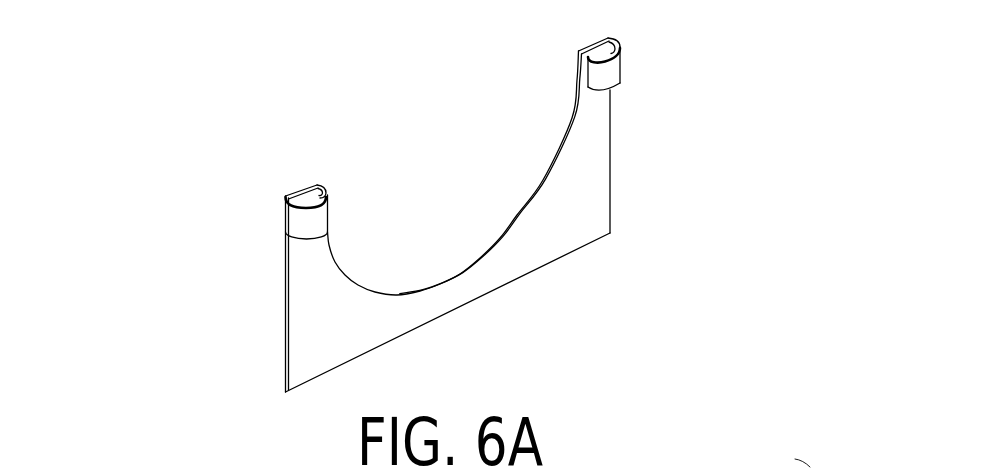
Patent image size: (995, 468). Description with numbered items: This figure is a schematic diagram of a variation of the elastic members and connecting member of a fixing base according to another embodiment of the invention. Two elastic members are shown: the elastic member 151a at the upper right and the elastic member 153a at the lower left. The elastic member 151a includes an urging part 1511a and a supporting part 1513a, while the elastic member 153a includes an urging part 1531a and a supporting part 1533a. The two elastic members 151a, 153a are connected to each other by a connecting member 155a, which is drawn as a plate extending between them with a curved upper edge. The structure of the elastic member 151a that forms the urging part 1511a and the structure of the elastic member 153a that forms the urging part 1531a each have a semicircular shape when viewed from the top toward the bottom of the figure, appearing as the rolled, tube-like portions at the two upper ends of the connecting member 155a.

The elastic member 151a is at (807, 12).
The urging part 1511a is at (610, 69).
The supporting part 1513a is at (593, 44).
The elastic member 153a is at (130, 157).
The urging part 1531a is at (313, 217).
The supporting part 1533a is at (289, 196).
The connecting member 155a is at (547, 243).